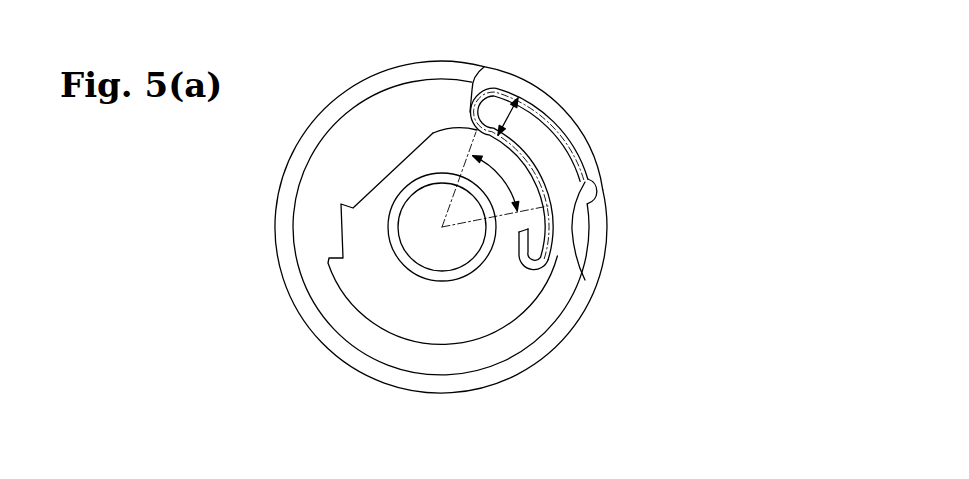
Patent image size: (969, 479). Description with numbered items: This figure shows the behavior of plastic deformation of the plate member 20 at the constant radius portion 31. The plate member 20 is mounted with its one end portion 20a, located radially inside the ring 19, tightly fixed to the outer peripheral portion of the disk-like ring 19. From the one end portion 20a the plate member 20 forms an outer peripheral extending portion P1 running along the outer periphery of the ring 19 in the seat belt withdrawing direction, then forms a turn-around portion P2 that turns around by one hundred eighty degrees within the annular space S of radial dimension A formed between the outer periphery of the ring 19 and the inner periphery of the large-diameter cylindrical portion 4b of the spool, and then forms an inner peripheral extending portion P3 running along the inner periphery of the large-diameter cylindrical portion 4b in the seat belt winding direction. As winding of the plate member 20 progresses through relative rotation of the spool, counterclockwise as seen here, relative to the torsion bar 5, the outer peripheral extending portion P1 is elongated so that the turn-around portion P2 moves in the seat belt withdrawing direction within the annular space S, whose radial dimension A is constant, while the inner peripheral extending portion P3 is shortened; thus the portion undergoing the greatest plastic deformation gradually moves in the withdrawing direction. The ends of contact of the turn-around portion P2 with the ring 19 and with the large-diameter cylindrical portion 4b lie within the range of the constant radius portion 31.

The large-diameter cylindrical portion 4b is at (277, 237).
The inner peripheral extending portion P3 is at (550, 112).
The turn-around portion P2 is at (485, 64).
The plate member 20 is at (558, 237).
The one end portion 20a is at (535, 266).
The constant radius portion 31 is at (590, 188).
The outer peripheral extending portion P1 is at (584, 220).
The ring 19 is at (343, 294).
The torsion bar 5 is at (441, 257).
The annular space S is at (362, 137).
The radial dimension A is at (513, 117).